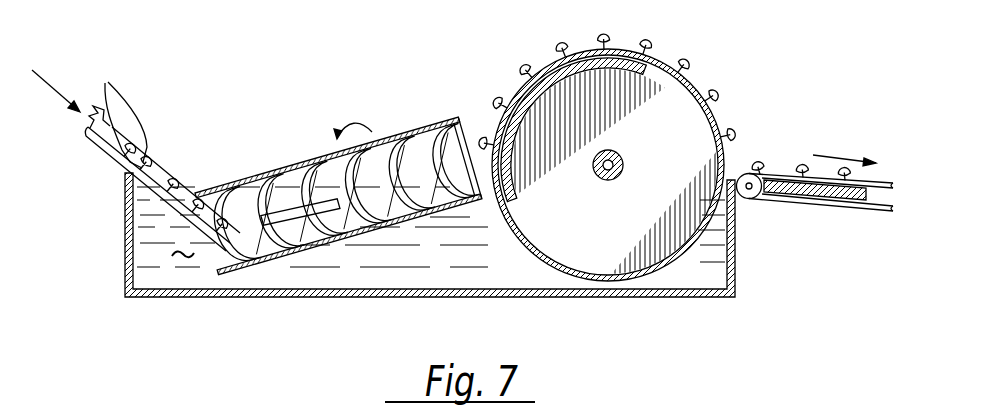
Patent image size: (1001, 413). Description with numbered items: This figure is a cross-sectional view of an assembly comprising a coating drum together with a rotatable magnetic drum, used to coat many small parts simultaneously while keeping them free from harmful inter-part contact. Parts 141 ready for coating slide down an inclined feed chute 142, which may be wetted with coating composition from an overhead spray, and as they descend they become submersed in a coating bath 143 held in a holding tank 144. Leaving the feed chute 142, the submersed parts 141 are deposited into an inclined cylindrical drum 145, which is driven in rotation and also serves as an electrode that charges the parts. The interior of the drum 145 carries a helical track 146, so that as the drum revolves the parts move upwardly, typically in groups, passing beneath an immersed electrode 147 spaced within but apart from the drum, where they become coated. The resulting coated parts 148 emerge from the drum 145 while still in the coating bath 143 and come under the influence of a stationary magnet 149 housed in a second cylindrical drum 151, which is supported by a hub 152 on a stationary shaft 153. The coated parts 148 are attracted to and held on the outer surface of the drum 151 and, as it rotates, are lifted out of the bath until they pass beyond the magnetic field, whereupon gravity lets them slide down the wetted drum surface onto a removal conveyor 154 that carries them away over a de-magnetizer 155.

The parts 141 is at (106, 85).
The feed chute 142 is at (123, 162).
The coating bath 143 is at (177, 262).
The holding tank 144 is at (403, 297).
The cylindrical drum 145 is at (247, 170).
The helical track 146 is at (437, 150).
The immersed electrode 147 is at (307, 187).
The coated parts 148 is at (740, 130).
The stationary magnet 149 is at (520, 183).
The cylindrical drum 151 is at (655, 272).
The hub 152 is at (621, 176).
The stationary shaft 153 is at (614, 158).
The removal conveyor 154 is at (882, 180).
The de-magnetizer 155 is at (793, 196).